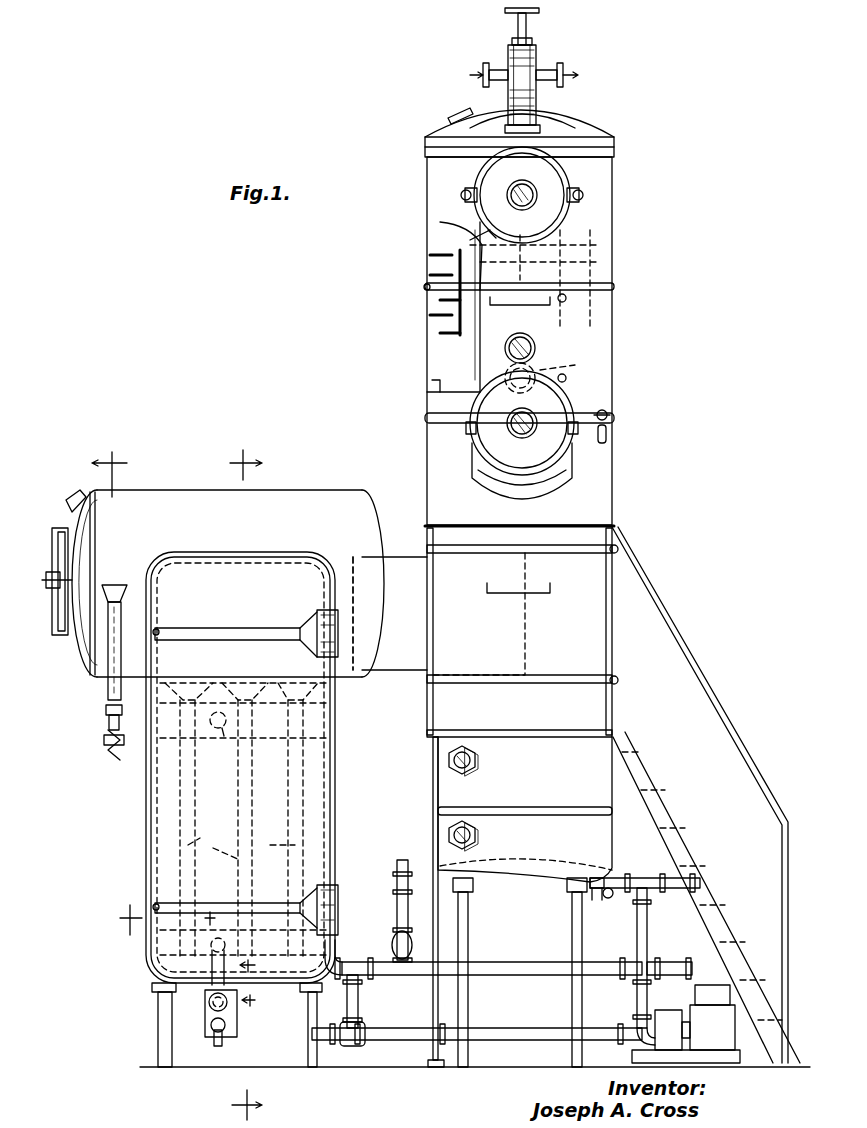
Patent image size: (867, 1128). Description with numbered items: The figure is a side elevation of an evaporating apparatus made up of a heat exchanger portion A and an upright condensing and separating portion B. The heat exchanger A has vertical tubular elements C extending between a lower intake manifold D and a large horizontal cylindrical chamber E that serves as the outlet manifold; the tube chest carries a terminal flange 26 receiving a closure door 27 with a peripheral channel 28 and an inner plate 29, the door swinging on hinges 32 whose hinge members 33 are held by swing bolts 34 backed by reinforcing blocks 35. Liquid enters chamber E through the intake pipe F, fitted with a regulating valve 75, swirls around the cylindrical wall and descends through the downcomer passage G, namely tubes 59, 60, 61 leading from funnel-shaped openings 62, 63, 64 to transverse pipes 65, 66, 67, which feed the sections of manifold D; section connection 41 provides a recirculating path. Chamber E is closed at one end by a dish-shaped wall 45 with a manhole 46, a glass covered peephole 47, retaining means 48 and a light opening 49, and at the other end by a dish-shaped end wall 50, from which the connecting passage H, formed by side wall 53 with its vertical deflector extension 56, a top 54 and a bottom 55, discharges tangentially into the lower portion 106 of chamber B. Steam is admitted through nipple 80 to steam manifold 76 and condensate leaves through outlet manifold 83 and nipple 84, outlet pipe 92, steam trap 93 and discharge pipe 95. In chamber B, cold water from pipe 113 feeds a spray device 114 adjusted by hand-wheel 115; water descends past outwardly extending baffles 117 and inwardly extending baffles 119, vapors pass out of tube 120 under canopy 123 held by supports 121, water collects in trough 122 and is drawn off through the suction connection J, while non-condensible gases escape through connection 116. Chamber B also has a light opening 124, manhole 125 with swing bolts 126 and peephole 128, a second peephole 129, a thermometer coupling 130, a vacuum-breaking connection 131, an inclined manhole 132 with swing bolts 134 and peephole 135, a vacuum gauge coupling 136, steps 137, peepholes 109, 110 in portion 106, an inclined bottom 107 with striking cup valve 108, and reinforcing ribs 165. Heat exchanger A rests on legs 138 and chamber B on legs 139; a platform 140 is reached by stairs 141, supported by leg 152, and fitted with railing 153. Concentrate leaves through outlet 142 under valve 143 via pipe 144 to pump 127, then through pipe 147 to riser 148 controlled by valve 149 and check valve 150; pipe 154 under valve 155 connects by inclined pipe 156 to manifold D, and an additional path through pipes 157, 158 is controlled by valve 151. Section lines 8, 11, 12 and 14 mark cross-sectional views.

The condensing and separating portion B is at (623, 229).
The heat exchanger portion A is at (193, 487).
The horizontal cylindrical chamber E is at (312, 498).
The vertical tubular elements C is at (285, 815).
The intake manifold D is at (152, 978).
The intake pipe F is at (112, 640).
The downcomer passage G is at (241, 846).
The connecting passage H is at (403, 672).
The suction connection J is at (580, 363).
The section line 8 is at (162, 920).
The section line 11 is at (232, 774).
The section line 12 is at (109, 464).
The section line 14 is at (264, 983).
The terminal flange 26 is at (335, 812).
The closure door 27 is at (289, 576).
The peripheral channel 28 is at (152, 790).
The door plate 29 is at (278, 757).
The hinges 32 is at (318, 640).
The hinge member 33 is at (220, 628).
The swing bolt 34 is at (158, 630).
The reinforcing blocks 35 is at (258, 633).
The external connection 41 is at (336, 958).
The dish-shaped wall 45 is at (85, 572).
The manhole 46 is at (53, 625).
The glass covered peephole 47 is at (45, 548).
The retaining means 48 is at (52, 588).
The light opening 49 is at (70, 500).
The dish-shaped end wall 50 is at (380, 530).
The side wall 53 is at (410, 615).
The duct top 54 is at (404, 553).
The duct bottom 55 is at (385, 672).
The vertical deflector extension 56 is at (372, 582).
The downcomer tube 59 is at (197, 815).
The downcomer tube 60 is at (250, 815).
The downcomer tube 61 is at (305, 770).
The funnel-shaped opening 62 is at (190, 682).
The funnel-shaped opening 63 is at (247, 682).
The funnel-shaped opening 64 is at (294, 682).
The transverse pipe 65 is at (155, 975).
The transverse pipe 66 is at (250, 975).
The transverse pipe 67 is at (300, 985).
The regulating valve 75 is at (104, 740).
The steam manifold 76 is at (204, 830).
The short nipple 80 is at (216, 710).
The outlet manifold 83 is at (248, 925).
The outlet nipple 84 is at (228, 944).
The outlet pipe 92 is at (210, 1002).
The steam trap 93 is at (237, 1025).
The discharge pipe 95 is at (214, 1036).
The lower portion 106 is at (600, 765).
The bottom 107 is at (520, 868).
The striking cup valve 108 is at (594, 900).
The peephole 109 is at (478, 762).
The peephole 110 is at (476, 835).
The cold water pipe 113 is at (500, 68).
The spray device 114 is at (542, 128).
The hand-wheel 115 is at (530, 24).
The pipe connection 116 is at (560, 68).
The outwardly extending baffles 117 is at (440, 250).
The inwardly extending baffles 119 is at (430, 270).
The tube 120 is at (478, 340).
The supports 121 is at (432, 222).
The trough 122 is at (438, 386).
The canopy 123 is at (472, 243).
The light opening 124 is at (452, 116).
The manhole 125 is at (558, 178).
The swing bolts 126 is at (466, 190).
The pump 127 is at (662, 1016).
The peephole 128 is at (533, 180).
The second peephole 129 is at (537, 348).
The coupling 130 is at (567, 378).
The connection 131 is at (608, 432).
The manhole 132 is at (556, 455).
The swing bolts 134 is at (466, 430).
The peephole 135 is at (510, 420).
The vacuum gauge coupling 136 is at (567, 298).
The steps 137 is at (518, 304).
The legs 138 is at (158, 1010).
The legs 139 is at (470, 1005).
The platform 140 is at (516, 730).
The flight of stairs 141 is at (660, 835).
The valve controlled outlet 142 is at (610, 898).
The valve 143 is at (690, 882).
The pipe 144 is at (647, 928).
The pipe 147 is at (490, 1028).
The riser 148 is at (407, 1012).
The valve 149 is at (394, 942).
The check valve 150 is at (397, 876).
The valve 151 is at (680, 952).
The leg 152 is at (440, 925).
The railing 153 is at (722, 727).
The pipe 154 is at (385, 1042).
The valve 155 is at (352, 1045).
The inclined pipe 156 is at (352, 1000).
The pipe 157 is at (470, 962).
The pipe 158 is at (640, 993).
The reinforcing ribs 165 is at (614, 152).